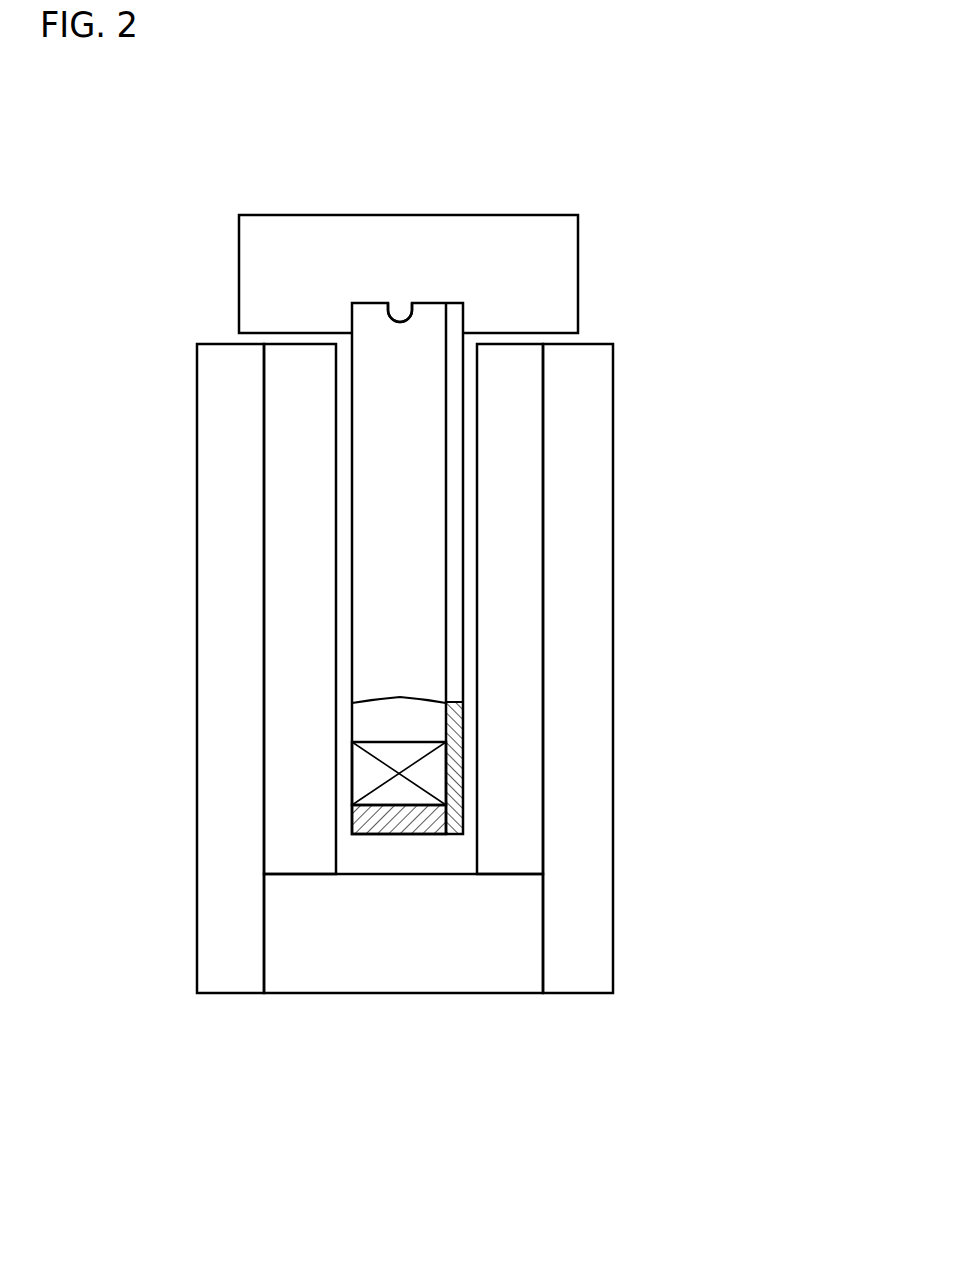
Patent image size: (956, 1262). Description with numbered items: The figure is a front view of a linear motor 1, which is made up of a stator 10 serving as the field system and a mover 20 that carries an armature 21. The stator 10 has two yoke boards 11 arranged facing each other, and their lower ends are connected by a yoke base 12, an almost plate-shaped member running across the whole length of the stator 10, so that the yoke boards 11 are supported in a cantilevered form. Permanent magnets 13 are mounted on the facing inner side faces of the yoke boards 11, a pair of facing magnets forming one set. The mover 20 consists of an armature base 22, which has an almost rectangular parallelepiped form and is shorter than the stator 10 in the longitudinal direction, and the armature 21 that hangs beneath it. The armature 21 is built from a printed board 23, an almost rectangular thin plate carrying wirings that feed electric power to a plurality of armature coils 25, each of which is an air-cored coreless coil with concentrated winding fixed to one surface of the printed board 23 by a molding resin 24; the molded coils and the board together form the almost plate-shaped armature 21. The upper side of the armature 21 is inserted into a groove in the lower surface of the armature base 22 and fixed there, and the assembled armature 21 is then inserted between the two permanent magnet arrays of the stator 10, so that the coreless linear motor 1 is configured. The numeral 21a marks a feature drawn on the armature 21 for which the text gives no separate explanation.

The linear motor 1 is at (146, 253).
The stator 10 is at (180, 356).
The yoke board 11 is at (217, 504).
The yoke base 12 is at (508, 975).
The permanent magnet 13 is at (282, 586).
The mover 20 is at (219, 240).
The armature 21 is at (483, 786).
The notch 21a is at (388, 303).
The armature base 22 is at (568, 284).
The printed board 23 is at (453, 470).
The molding resin 24 is at (407, 834).
The armature coil 25 is at (373, 765).